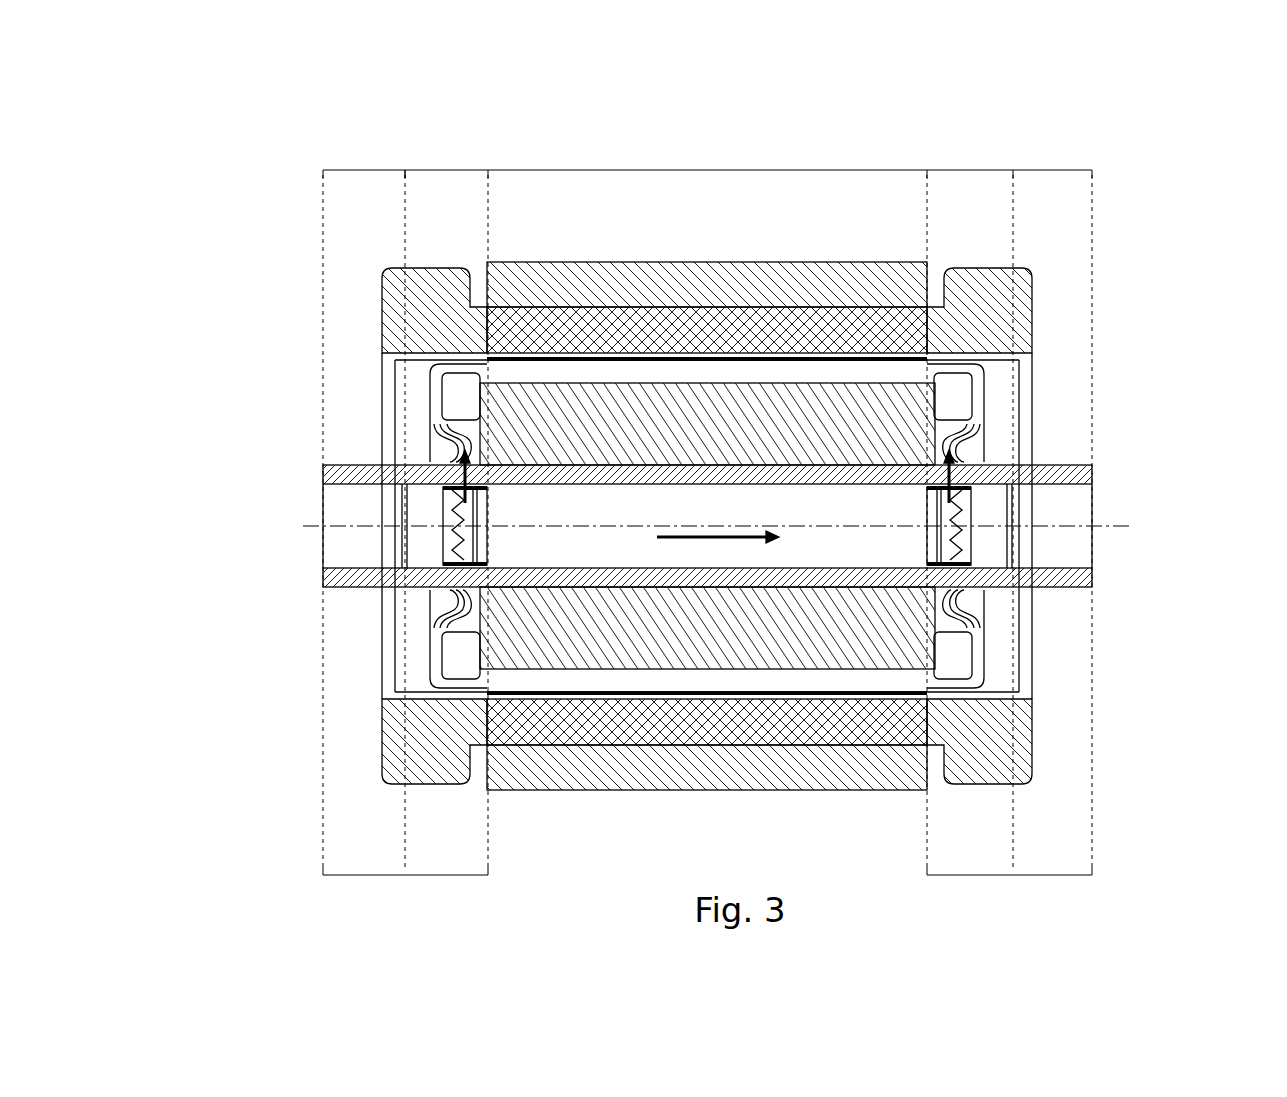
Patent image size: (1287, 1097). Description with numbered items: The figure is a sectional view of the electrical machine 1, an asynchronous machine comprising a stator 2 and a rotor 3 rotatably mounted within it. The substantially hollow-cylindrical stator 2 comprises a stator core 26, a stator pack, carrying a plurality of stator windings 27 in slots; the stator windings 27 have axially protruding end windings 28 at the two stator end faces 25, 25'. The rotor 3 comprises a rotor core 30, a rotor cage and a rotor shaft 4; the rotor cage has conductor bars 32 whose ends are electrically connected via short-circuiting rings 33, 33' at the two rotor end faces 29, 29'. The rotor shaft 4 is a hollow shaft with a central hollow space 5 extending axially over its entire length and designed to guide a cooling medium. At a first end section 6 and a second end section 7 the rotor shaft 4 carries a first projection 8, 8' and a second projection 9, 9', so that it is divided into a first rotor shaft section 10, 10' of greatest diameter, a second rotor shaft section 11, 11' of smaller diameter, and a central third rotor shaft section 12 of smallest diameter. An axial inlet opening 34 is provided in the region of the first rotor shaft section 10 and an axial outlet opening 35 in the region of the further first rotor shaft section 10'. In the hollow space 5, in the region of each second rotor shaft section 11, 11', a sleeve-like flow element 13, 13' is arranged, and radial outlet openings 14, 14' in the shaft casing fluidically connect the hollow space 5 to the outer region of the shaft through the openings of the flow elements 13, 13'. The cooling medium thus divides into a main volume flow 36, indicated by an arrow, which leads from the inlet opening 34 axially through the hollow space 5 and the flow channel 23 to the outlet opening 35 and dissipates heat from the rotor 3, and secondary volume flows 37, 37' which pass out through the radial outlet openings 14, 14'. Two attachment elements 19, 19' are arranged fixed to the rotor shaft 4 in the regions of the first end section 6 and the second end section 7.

The electrical machine 1 is at (287, 165).
The stator 2 is at (367, 314).
The rotor 3 is at (368, 393).
The rotor shaft 4 is at (395, 470).
The hollow space 5 is at (417, 540).
The first end section 6 is at (405, 875).
The second end section 7 is at (1010, 875).
The first projection 8 is at (352, 623).
The first projection 8' is at (1069, 626).
The second projection 9 is at (489, 717).
The second projection 9' is at (880, 720).
The first rotor shaft section 10 is at (364, 499).
The further first rotor shaft section 10' is at (1052, 499).
The second rotor shaft section 11 is at (446, 499).
The further second rotor shaft section 11' is at (970, 499).
The third rotor shaft section 12 is at (708, 168).
The flow element 13 is at (389, 690).
The flow element 13' is at (1041, 665).
The radial outlet opening 14 is at (489, 709).
The radial outlet opening 14' is at (893, 684).
The attachment element 19 is at (345, 473).
The further attachment element 19' is at (1046, 515).
The flow channel 23 is at (586, 530).
The stator end face 25 is at (336, 467).
The stator end face 25' is at (1050, 498).
The stator core 26 is at (762, 295).
The stator windings 27 is at (793, 347).
The end windings 28 is at (435, 300).
The rotor end face 29 is at (334, 521).
The rotor end face 29' is at (1088, 526).
The rotor core 30 is at (688, 427).
The conductor bars 32 is at (600, 373).
The short-circuiting rings 33 is at (330, 517).
The can coating layer 33' is at (1091, 526).
The axial inlet opening 34 is at (320, 537).
The axial outlet opening 35 is at (1095, 538).
The main volume flow 36 is at (663, 540).
The secondary volume flow 37 is at (367, 655).
The secondary volume flow 37' is at (1101, 615).